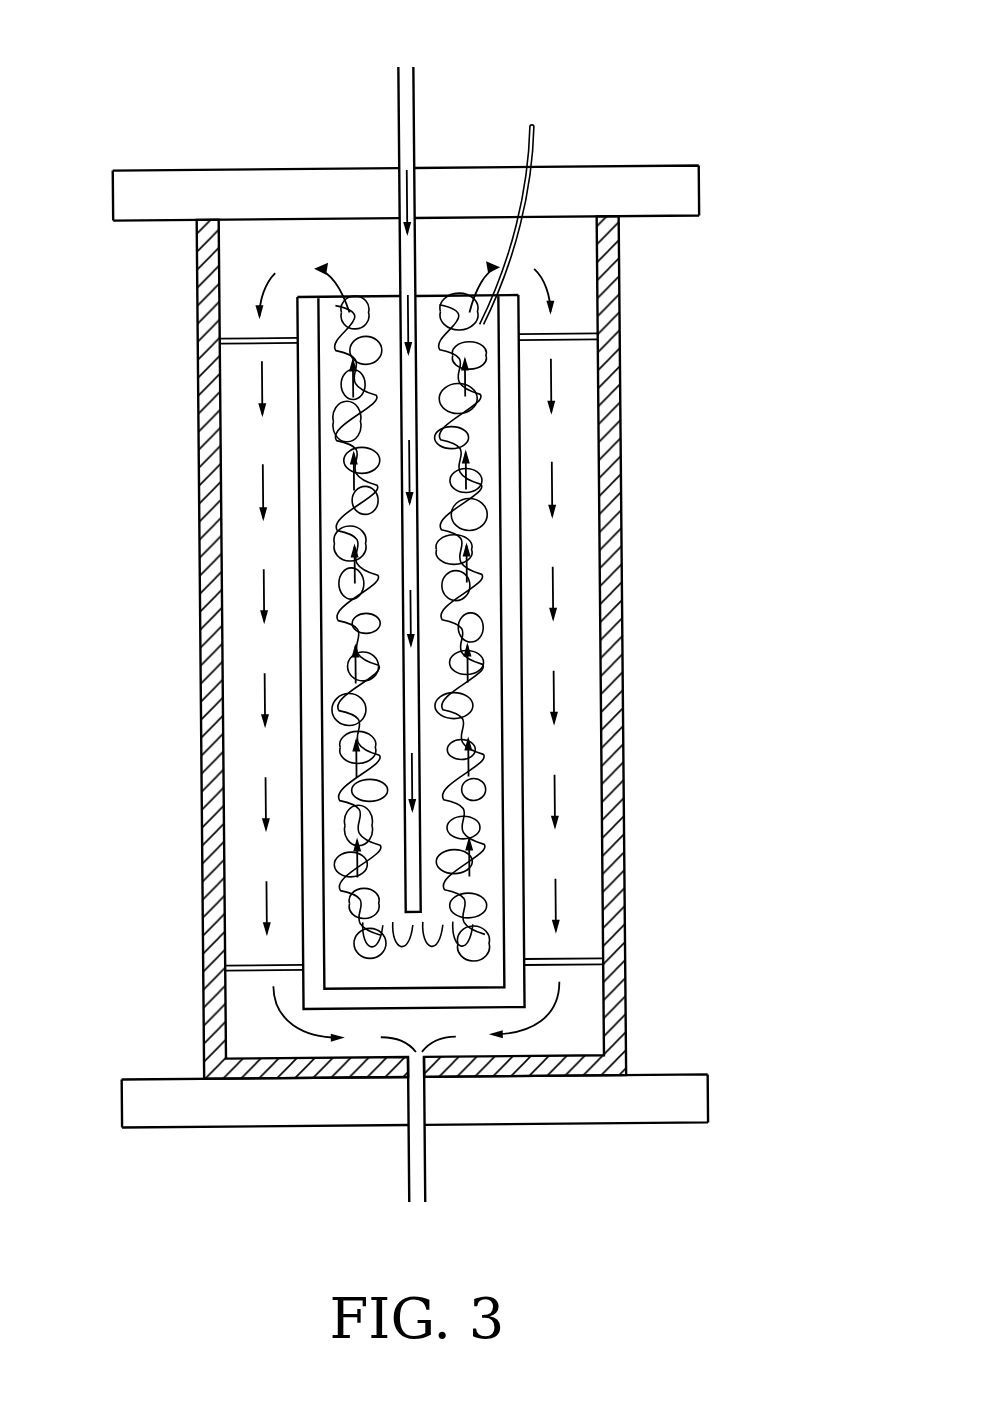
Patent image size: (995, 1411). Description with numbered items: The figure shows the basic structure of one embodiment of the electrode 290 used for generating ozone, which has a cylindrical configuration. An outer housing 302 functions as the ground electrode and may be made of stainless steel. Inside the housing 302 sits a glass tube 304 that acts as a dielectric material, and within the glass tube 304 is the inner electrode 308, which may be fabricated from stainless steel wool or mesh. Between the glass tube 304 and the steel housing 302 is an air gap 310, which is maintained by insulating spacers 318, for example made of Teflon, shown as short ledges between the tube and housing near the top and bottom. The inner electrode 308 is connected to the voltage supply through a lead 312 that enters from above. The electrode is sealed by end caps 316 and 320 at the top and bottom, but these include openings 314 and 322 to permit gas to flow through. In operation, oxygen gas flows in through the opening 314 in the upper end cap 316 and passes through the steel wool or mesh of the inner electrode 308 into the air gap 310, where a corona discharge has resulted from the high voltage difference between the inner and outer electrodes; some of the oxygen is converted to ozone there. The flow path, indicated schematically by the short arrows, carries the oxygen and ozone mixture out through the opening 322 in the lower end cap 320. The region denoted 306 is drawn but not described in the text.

The electrode 290 is at (679, 500).
The housing 302 is at (622, 331).
The glass tube 304 is at (521, 433).
The inner chamber flow path 306 is at (421, 525).
The inner electrode 308 is at (480, 624).
The air gap 310 is at (575, 744).
The lead 312 is at (537, 149).
The opening 314 is at (418, 97).
The end cap 316 is at (702, 193).
The insulating spacers 318 is at (240, 343).
The end cap 320 is at (704, 1101).
The opening 322 is at (418, 1168).